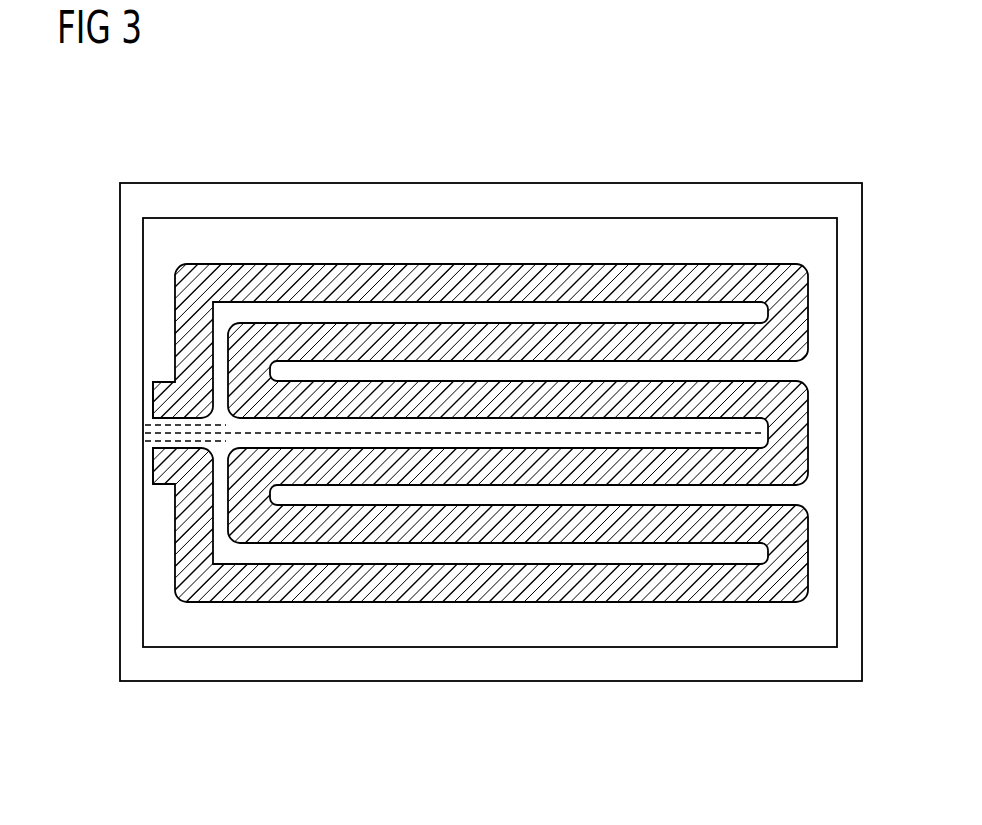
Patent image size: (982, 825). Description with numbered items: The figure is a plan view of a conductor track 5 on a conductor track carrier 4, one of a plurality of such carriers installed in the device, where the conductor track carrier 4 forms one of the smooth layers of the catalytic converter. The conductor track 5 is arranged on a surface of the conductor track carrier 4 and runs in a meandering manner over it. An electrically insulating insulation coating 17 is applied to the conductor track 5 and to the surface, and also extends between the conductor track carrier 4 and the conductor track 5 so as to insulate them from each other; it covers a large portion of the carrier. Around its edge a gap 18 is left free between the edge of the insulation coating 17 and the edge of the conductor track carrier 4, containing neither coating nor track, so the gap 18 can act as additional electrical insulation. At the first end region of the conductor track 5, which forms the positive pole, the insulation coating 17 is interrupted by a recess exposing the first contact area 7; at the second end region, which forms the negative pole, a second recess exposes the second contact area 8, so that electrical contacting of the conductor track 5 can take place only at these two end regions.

The conductor track carrier 4 is at (716, 92).
The conductor track 5 is at (471, 580).
The first contact area 7 is at (175, 490).
The second contact area 8 is at (175, 372).
The insulation coating 17 is at (645, 625).
The gap 18 is at (321, 203).